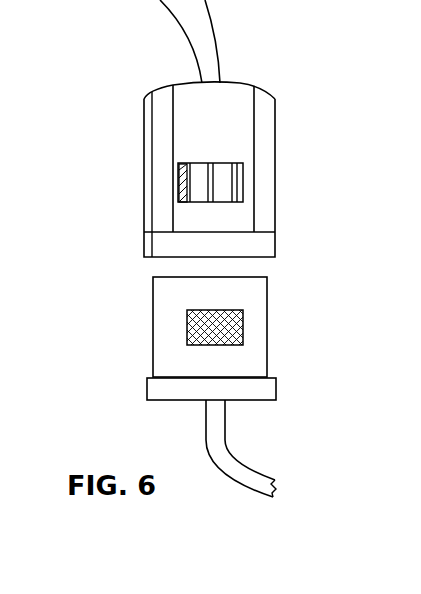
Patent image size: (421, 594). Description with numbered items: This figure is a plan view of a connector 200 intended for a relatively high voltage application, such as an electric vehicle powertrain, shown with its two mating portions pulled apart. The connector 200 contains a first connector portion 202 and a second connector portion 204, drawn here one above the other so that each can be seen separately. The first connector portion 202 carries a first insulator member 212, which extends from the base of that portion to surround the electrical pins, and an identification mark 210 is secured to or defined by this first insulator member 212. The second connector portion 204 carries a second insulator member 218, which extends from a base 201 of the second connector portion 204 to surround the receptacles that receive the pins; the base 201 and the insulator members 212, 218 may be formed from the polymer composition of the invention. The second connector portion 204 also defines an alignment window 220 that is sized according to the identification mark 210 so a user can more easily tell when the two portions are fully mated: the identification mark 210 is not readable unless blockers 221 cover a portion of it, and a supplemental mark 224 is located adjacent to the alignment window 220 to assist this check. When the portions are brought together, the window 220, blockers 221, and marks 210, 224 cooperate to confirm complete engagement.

The connector 200 is at (130, 76).
The second connector portion 204 is at (242, 84).
The second insulator member 218 is at (243, 122).
The alignment window 220 is at (219, 162).
The supplemental mark 224 is at (179, 183).
The blockers 221 is at (212, 193).
The first insulator member 212 is at (168, 298).
The identification mark 210 is at (190, 330).
The base 201 is at (157, 396).
The first connector portion 202 is at (252, 402).